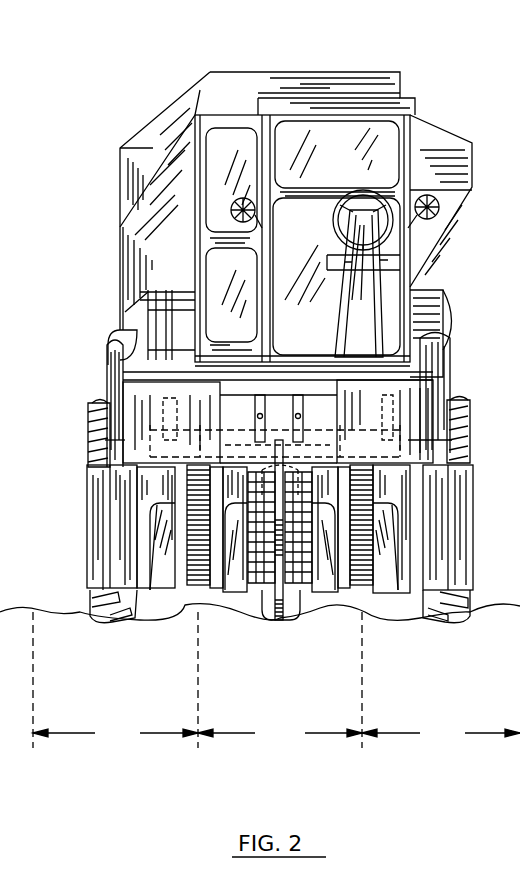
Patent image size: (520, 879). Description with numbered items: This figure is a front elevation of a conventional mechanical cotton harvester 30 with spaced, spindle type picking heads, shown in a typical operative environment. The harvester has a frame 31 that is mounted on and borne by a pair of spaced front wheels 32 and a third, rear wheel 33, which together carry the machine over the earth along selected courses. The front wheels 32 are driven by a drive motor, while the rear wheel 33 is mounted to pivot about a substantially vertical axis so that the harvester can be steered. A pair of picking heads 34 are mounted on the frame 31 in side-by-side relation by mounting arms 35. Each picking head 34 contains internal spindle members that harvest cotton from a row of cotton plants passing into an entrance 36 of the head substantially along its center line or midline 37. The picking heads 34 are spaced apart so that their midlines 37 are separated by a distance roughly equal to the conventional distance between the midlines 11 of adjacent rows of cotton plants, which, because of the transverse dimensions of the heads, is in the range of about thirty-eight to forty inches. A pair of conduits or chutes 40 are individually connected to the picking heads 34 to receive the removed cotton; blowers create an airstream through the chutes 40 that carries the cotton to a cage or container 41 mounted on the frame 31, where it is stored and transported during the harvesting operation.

The cotton harvester 30 is at (148, 110).
The container 41 is at (150, 135).
The chutes 40 is at (117, 368).
The front wheels 32 is at (102, 452).
The frame 31 is at (200, 425).
The mounting arms 35 is at (173, 402).
The picking heads 34 is at (147, 518).
The midline 37 is at (200, 540).
The entrance 36 is at (193, 578).
The rear wheel 33 is at (256, 612).
The midlines of adjacent rows 11 is at (198, 692).